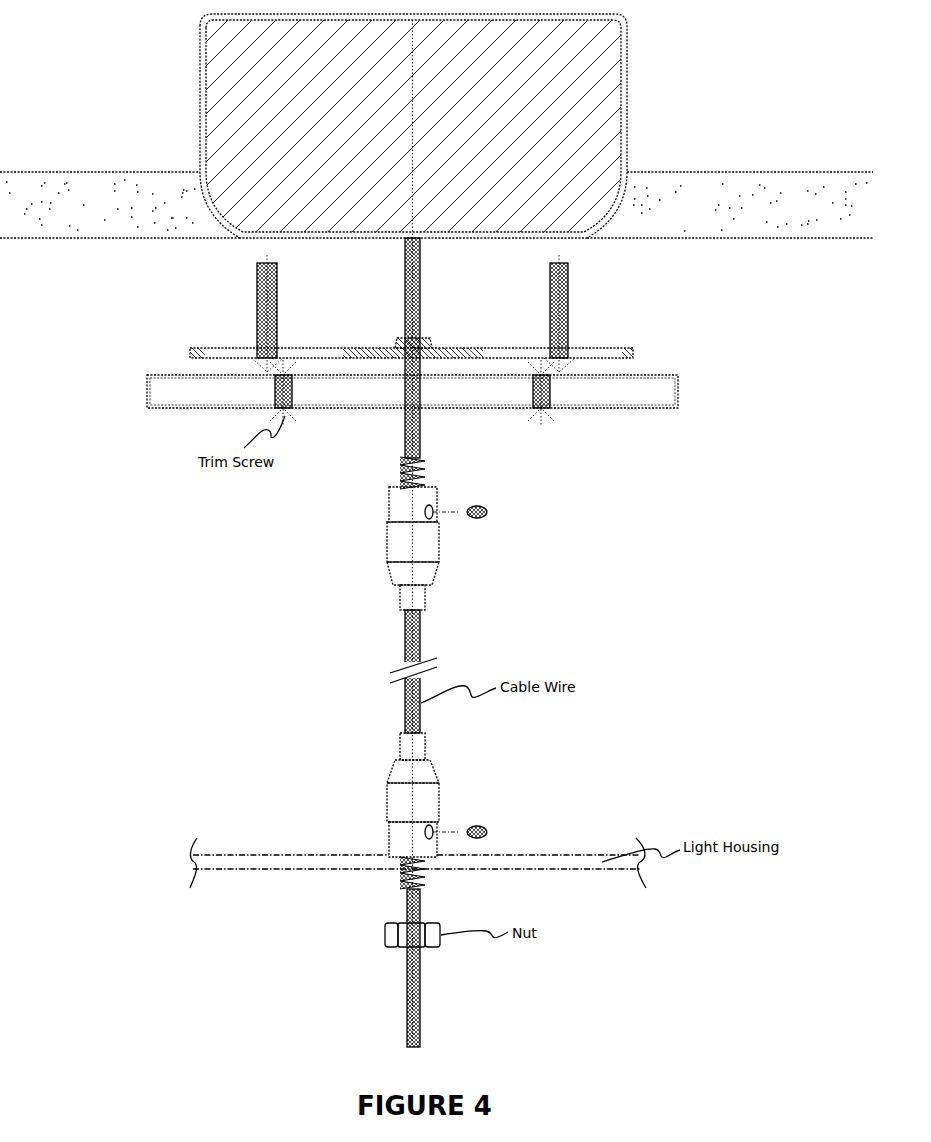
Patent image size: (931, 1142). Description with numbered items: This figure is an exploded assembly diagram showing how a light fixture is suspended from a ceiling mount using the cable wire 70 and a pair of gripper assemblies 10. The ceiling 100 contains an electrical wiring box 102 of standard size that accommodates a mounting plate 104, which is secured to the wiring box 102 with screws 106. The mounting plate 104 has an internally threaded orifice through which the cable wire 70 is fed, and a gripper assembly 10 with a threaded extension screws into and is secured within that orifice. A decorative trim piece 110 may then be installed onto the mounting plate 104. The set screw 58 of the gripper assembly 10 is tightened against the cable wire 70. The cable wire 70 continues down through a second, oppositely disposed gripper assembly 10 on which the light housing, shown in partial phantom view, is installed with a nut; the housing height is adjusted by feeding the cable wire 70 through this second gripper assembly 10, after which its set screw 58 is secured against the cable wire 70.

The wiring box 102 is at (627, 120).
The ceiling 100 is at (690, 188).
The screws 106 is at (258, 290).
The mounting plate 104 is at (633, 350).
The decorative trim piece 110 is at (678, 400).
The gripper assembly 10 is at (439, 548).
The set screw 58 is at (486, 505).
The cable wire 70 is at (421, 636).